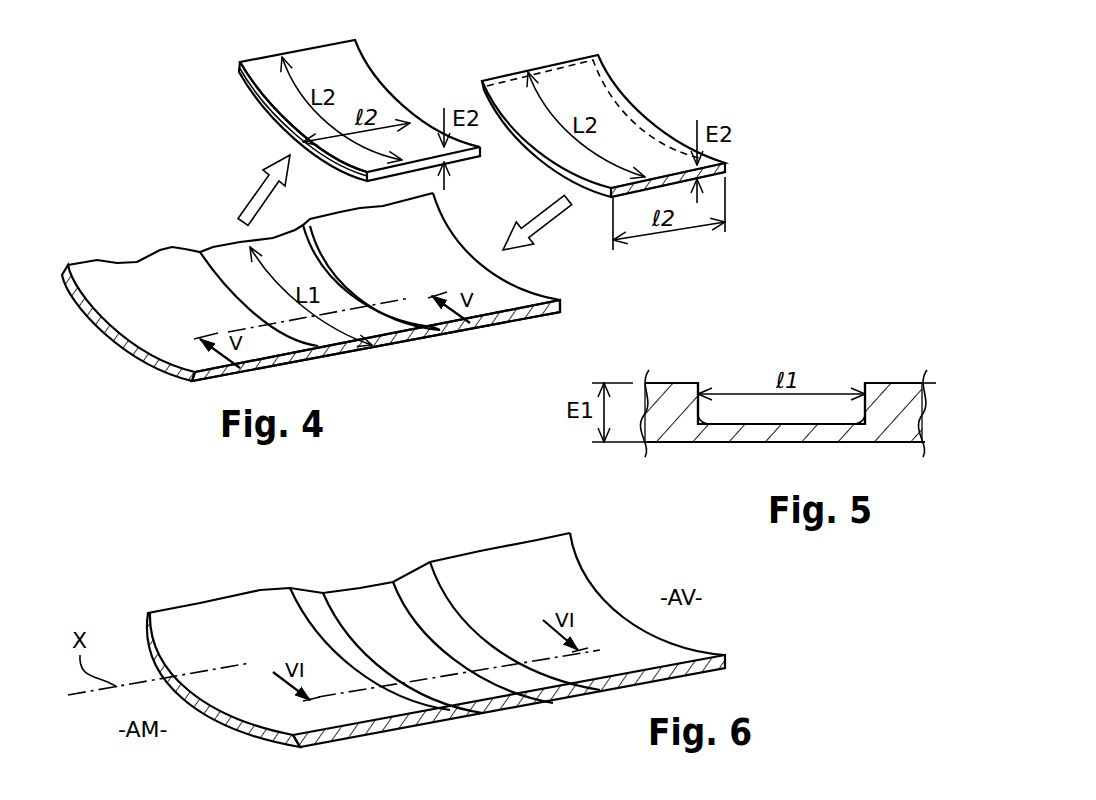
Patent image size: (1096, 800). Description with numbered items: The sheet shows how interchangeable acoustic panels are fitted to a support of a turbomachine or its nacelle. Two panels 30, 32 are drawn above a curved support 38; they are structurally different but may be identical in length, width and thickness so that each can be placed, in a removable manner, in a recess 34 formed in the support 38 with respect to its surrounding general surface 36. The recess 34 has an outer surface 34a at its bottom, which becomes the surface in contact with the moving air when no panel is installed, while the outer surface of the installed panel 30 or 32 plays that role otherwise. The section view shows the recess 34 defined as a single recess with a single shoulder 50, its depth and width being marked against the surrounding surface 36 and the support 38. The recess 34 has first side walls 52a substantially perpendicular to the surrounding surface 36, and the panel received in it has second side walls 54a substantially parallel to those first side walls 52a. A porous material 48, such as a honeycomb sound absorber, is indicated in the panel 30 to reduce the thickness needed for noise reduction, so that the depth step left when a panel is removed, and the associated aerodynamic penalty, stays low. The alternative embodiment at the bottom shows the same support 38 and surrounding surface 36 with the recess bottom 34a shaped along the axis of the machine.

In FIG. 4, the acoustic panel 30 is at (353, 72).
In FIG. 4, the panel 32 is at (570, 63).
In FIG. 4, the recess 34 is at (382, 332).
In FIG. 5, the recess 34 is at (747, 410).
In FIG. 4, the outer surface of the notch 34a is at (225, 260).
In FIG. 5, the outer surface of the notch 34a is at (790, 410).
In FIG. 6, the outer surface of the notch 34a is at (387, 647).
In FIG. 4, the surrounding general surface 36 is at (457, 273).
In FIG. 5, the surrounding general surface 36 is at (903, 392).
In FIG. 6, the surrounding general surface 36 is at (203, 630).
In FIG. 4, the support 38 is at (523, 323).
In FIG. 5, the support 38 is at (887, 437).
In FIG. 4, the porous material 48 is at (242, 74).
In FIG. 5, the shoulder 50 is at (860, 410).
In FIG. 5, the first side walls 52a is at (713, 407).
In FIG. 4, the second side walls 54a is at (267, 120).